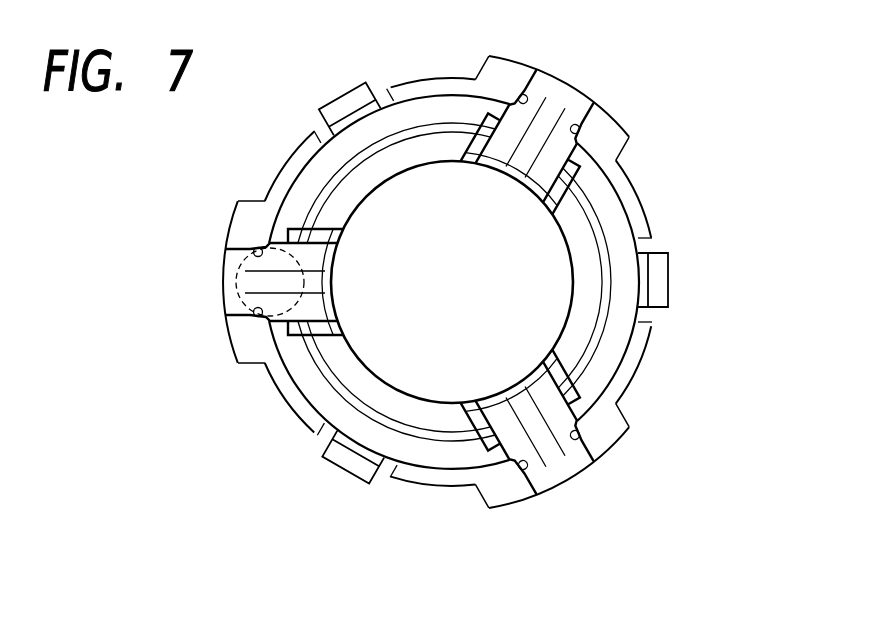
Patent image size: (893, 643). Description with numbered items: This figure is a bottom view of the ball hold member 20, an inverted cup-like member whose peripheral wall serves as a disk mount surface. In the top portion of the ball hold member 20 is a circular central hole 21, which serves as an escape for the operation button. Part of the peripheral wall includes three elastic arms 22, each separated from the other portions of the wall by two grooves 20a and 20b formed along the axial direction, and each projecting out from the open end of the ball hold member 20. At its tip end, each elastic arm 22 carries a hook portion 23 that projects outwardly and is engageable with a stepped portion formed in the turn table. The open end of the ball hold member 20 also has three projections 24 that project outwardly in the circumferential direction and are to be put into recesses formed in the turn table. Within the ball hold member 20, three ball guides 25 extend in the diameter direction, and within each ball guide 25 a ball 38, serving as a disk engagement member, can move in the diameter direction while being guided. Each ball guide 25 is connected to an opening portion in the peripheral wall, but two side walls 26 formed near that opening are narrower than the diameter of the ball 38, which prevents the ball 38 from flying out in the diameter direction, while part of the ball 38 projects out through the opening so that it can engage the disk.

The ball hold member 20 is at (632, 197).
The groove 20a is at (650, 242).
The groove 20b is at (647, 316).
The circular central hole 21 is at (380, 188).
The elastic arm 22 is at (684, 290).
The hook portion 23 is at (668, 272).
The projection 24 is at (600, 112).
The ball guide 25 is at (318, 305).
The side wall 26 is at (515, 99).
The ball 38 is at (250, 268).